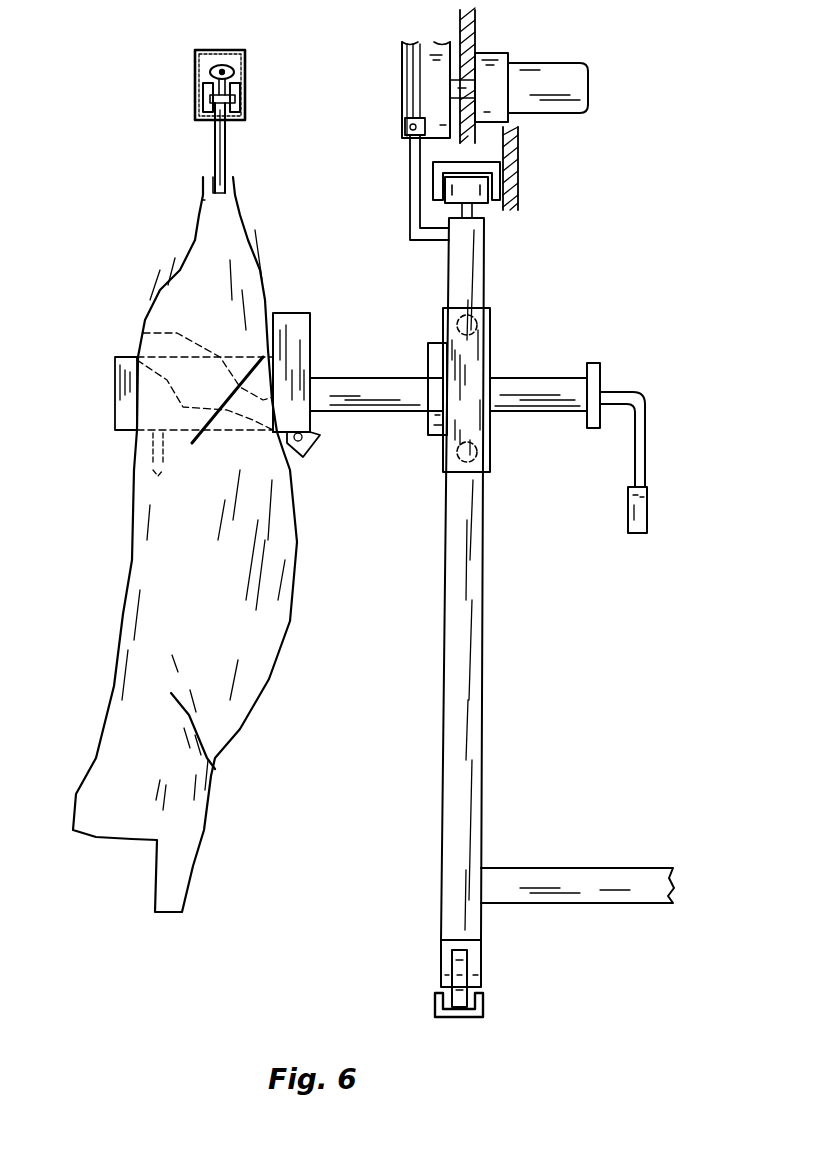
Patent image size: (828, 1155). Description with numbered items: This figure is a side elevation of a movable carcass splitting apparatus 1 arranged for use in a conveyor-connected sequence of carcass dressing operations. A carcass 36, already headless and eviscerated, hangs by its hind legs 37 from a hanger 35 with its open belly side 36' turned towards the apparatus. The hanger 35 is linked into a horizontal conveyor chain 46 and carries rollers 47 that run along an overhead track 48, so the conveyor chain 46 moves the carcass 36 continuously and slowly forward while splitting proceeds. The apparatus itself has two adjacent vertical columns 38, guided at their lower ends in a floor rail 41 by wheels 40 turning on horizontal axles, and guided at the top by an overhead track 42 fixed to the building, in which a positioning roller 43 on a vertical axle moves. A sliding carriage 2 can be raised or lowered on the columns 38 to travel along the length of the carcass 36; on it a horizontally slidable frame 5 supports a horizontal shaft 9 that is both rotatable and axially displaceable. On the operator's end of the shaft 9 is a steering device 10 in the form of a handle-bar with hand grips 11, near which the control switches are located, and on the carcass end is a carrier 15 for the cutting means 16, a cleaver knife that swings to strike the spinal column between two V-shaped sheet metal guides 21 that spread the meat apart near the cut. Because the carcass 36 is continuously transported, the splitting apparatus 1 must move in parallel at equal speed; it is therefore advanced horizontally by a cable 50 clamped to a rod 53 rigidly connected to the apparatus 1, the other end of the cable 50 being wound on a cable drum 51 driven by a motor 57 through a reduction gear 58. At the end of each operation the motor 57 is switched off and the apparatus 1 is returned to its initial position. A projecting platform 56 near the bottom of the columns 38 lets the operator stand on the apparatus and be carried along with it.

The splitting apparatus 1 is at (395, 456).
The sliding carriage 2 is at (496, 356).
The horizontally slidable frame 5 is at (421, 372).
The horizontal shaft 9 is at (537, 385).
The steering device 10 is at (645, 443).
The hand grips 11 is at (630, 521).
The carrier 15 is at (319, 357).
The cutting means 16 is at (150, 338).
The sheet metal guides 21 is at (120, 416).
The hanger 35 is at (218, 152).
The carcass 36 is at (185, 544).
The open belly side 36' is at (313, 583).
The hind legs 37 is at (215, 204).
The vertical columns 38 is at (463, 648).
The wheels 40 is at (463, 968).
The floor rail 41 is at (437, 1006).
The overhead track 42 is at (488, 167).
The positioning roller 43 is at (480, 190).
The conveyor chain 46 is at (235, 73).
The rollers 47 is at (205, 98).
The overhead track 48 is at (197, 63).
The cable 50 is at (413, 107).
The cable drum 51 is at (402, 77).
The rod 53 is at (416, 210).
The projecting platform 56 is at (592, 880).
The motor 57 is at (553, 72).
The reduction gear 58 is at (498, 68).